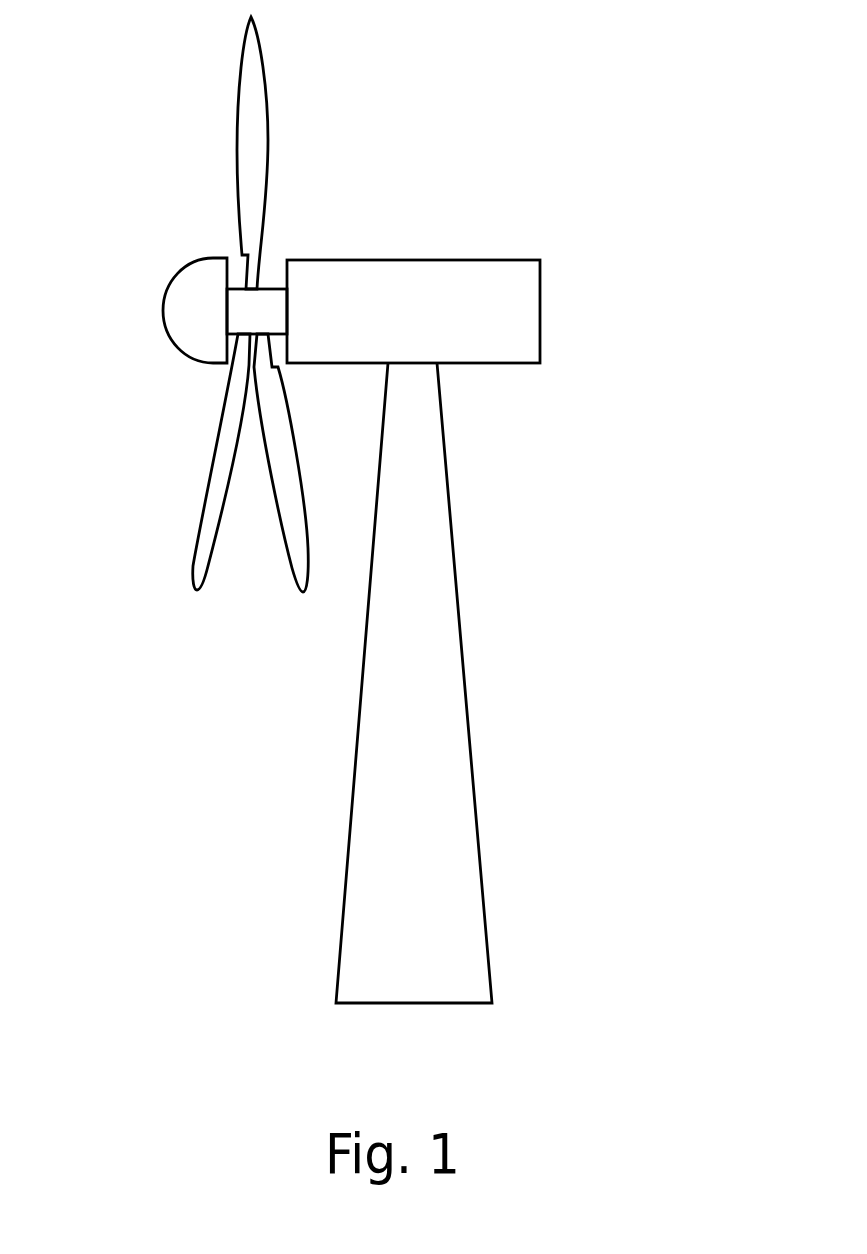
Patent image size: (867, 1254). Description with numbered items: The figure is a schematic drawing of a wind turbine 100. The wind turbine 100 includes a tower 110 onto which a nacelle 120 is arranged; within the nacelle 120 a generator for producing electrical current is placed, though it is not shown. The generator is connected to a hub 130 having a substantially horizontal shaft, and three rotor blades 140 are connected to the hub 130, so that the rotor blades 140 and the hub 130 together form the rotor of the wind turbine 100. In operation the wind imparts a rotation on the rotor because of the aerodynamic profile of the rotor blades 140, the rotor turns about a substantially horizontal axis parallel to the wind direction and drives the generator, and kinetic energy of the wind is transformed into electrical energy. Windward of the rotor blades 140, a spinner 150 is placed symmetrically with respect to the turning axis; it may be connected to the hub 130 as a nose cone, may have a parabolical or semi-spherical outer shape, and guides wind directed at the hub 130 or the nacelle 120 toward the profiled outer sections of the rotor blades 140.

The wind turbine 100 is at (777, 95).
The tower 110 is at (466, 720).
The nacelle 120 is at (540, 295).
The hub 130 is at (262, 302).
The rotor blades 140 is at (247, 180).
The spinner 150 is at (185, 343).